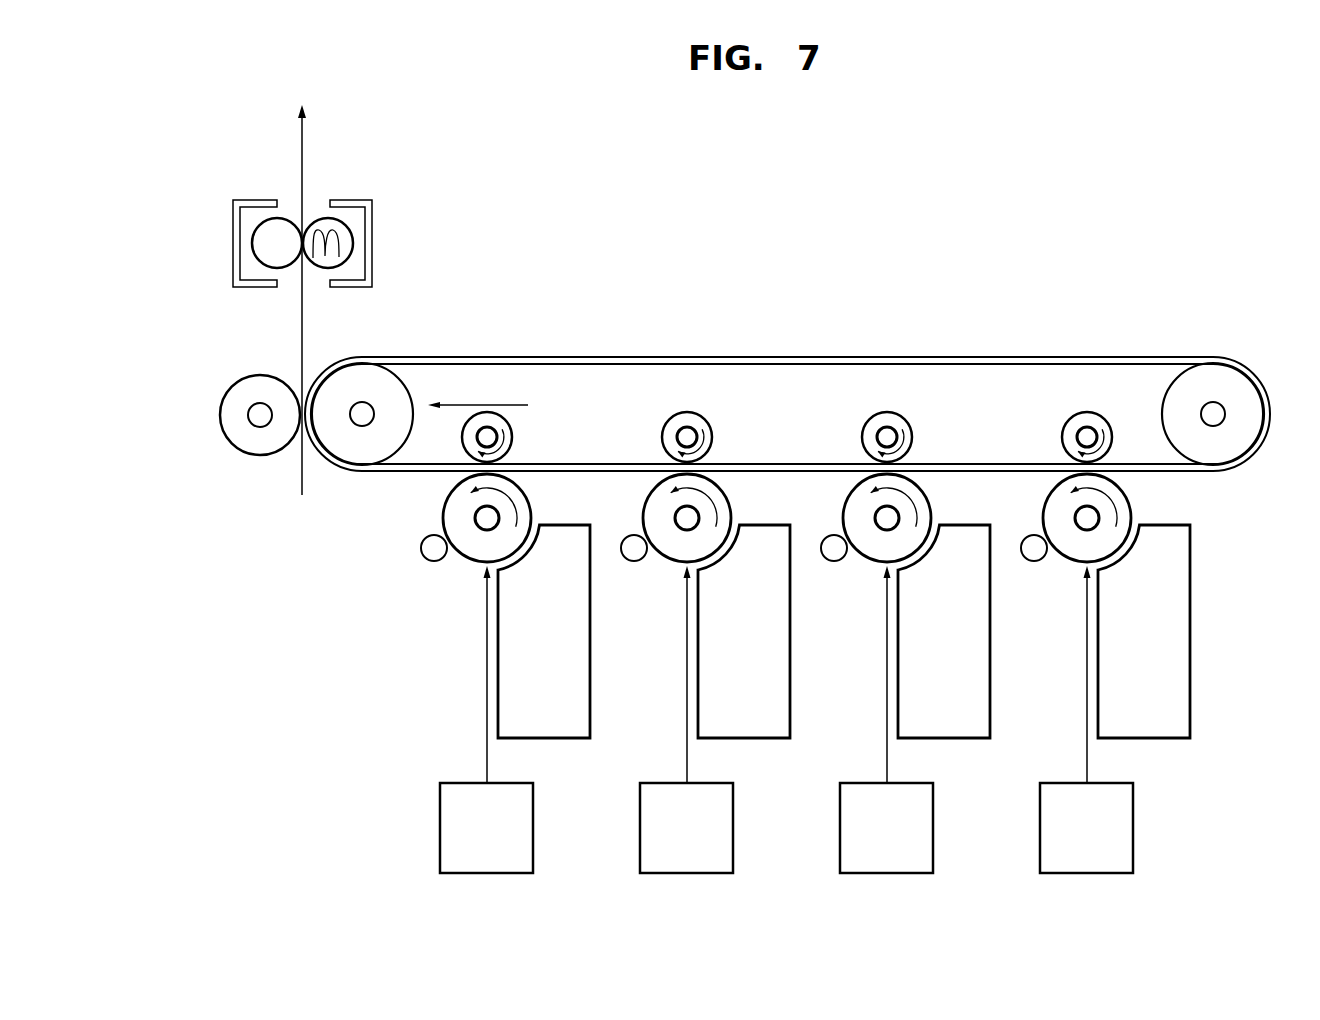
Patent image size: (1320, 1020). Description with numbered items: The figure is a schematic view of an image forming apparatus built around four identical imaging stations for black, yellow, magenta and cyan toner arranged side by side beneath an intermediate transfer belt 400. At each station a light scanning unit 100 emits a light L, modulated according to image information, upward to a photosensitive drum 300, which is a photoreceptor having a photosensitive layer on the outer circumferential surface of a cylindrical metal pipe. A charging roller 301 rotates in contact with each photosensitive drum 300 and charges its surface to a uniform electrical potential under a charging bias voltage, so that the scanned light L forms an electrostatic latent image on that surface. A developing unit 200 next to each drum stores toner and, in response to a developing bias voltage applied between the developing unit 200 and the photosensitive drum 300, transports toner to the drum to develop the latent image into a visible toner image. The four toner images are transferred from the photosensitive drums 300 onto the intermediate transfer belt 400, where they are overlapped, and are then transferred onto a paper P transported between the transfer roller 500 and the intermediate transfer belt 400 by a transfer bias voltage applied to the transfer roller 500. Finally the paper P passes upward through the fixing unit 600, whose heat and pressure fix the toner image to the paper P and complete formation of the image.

The light scanning unit 100 is at (1133, 830).
The developing unit 200 is at (1148, 740).
The photosensitive drum 300 is at (1125, 492).
The charging roller 301 is at (1036, 568).
The intermediate transfer belt 400 is at (988, 357).
The transfer roller 500 is at (220, 413).
The fixing unit 600 is at (213, 255).
The paper P is at (300, 319).
The light L is at (1085, 718).